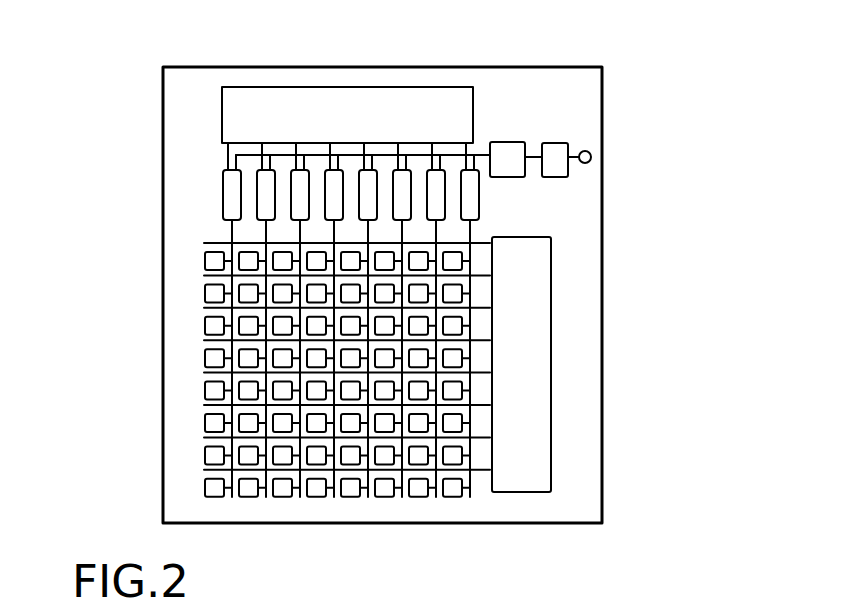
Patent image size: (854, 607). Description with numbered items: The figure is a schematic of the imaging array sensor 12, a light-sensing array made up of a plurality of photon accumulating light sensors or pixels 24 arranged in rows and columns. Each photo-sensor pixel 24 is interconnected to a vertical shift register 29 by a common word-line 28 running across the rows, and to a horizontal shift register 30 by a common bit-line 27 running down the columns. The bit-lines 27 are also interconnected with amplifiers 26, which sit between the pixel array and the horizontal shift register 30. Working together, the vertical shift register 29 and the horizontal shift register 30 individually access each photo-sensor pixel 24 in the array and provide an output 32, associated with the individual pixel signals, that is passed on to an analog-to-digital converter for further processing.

The imaging array sensor 12 is at (583, 467).
The photo-sensor pixel 24 is at (203, 258).
The amplifier 26 is at (222, 190).
The bit-line 27 is at (470, 233).
The word-line 28 is at (203, 305).
The vertical shift register 29 is at (540, 320).
The horizontal shift register 30 is at (333, 97).
The output 32 is at (592, 152).